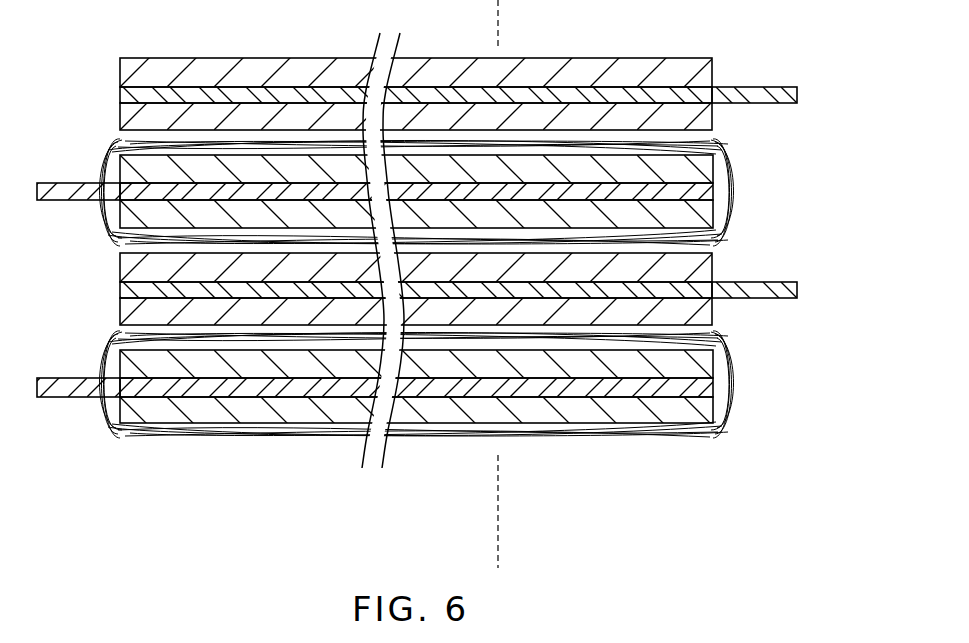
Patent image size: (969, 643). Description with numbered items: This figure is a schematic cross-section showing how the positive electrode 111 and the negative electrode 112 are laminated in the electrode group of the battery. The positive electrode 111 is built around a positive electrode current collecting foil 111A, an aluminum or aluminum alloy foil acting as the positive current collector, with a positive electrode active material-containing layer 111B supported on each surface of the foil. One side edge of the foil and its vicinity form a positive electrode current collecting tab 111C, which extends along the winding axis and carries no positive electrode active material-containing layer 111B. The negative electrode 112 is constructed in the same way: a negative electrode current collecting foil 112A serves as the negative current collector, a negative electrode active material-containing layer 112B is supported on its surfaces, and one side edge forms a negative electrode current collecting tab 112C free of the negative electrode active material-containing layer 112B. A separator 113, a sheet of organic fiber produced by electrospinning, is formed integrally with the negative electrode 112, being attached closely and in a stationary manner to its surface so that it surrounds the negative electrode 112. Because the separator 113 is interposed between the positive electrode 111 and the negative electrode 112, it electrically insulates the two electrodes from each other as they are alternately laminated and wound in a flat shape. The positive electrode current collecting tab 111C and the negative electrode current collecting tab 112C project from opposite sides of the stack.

The positive electrode 111 is at (408, 169).
The positive electrode current collecting foil 111A is at (459, 97).
The positive electrode active material-containing layer 111B is at (254, 72).
The positive electrode current collecting tab 111C is at (753, 97).
The negative electrode 112 is at (412, 252).
The negative electrode current collecting foil 112A is at (507, 192).
The negative electrode active material-containing layer 112B is at (144, 212).
The negative electrode current collecting tab 112C is at (56, 197).
The separator 113 is at (617, 143).